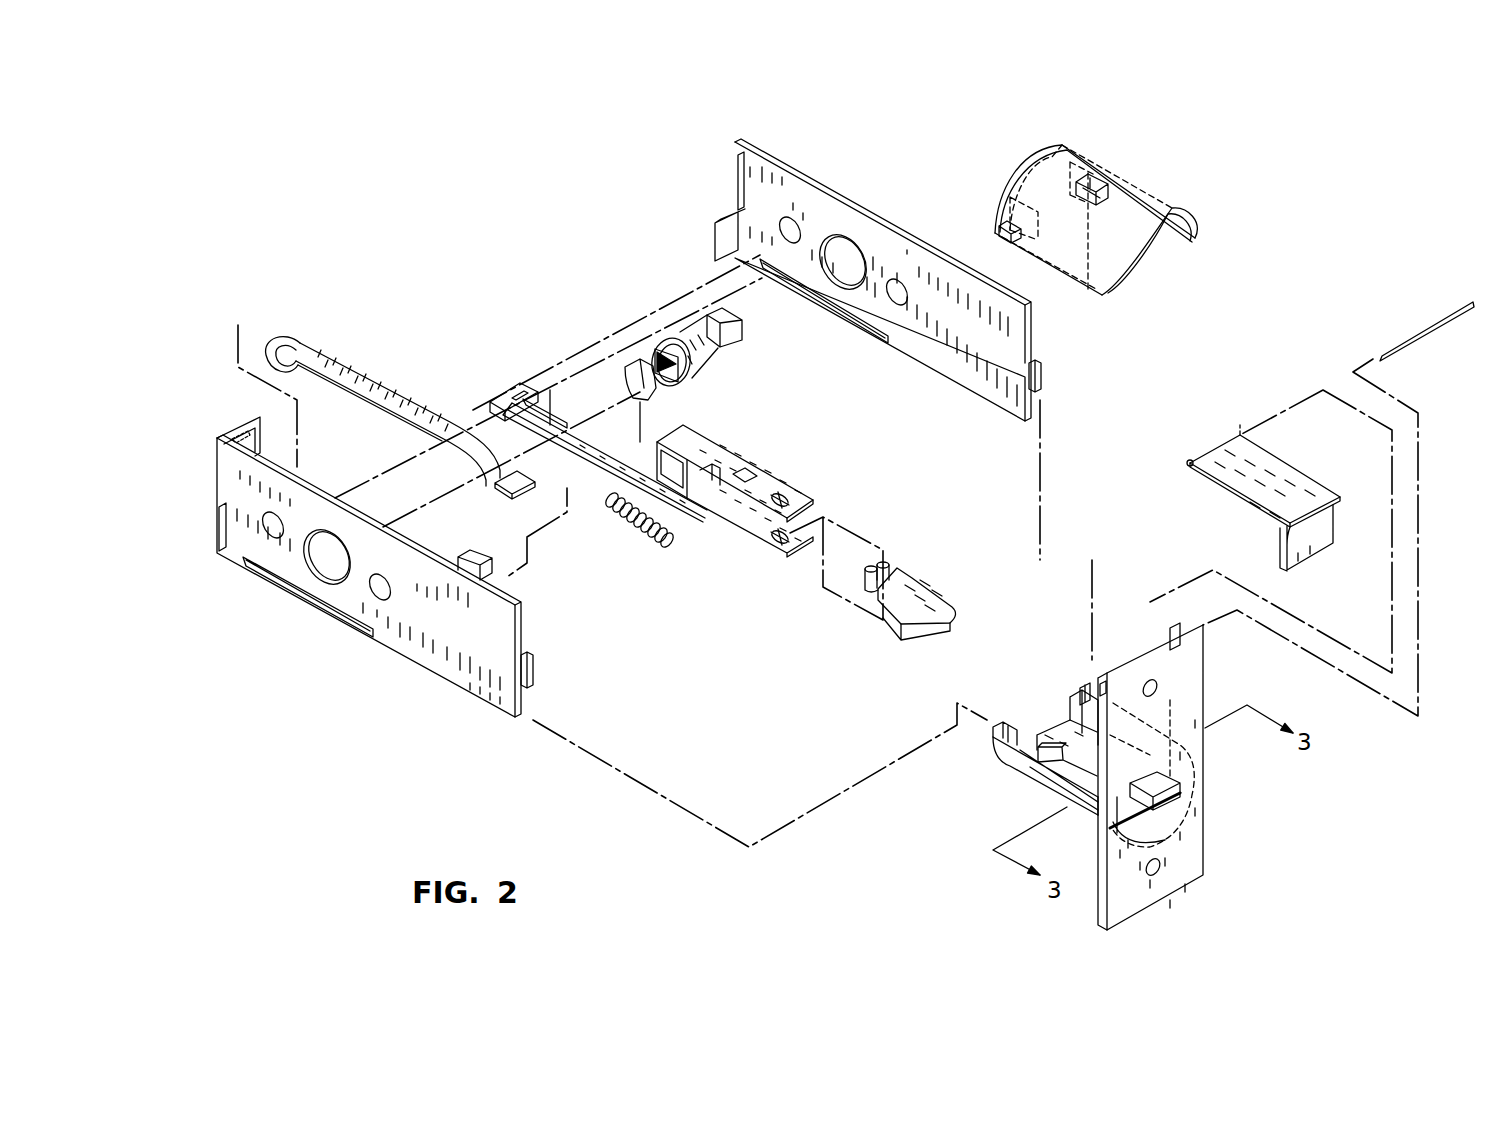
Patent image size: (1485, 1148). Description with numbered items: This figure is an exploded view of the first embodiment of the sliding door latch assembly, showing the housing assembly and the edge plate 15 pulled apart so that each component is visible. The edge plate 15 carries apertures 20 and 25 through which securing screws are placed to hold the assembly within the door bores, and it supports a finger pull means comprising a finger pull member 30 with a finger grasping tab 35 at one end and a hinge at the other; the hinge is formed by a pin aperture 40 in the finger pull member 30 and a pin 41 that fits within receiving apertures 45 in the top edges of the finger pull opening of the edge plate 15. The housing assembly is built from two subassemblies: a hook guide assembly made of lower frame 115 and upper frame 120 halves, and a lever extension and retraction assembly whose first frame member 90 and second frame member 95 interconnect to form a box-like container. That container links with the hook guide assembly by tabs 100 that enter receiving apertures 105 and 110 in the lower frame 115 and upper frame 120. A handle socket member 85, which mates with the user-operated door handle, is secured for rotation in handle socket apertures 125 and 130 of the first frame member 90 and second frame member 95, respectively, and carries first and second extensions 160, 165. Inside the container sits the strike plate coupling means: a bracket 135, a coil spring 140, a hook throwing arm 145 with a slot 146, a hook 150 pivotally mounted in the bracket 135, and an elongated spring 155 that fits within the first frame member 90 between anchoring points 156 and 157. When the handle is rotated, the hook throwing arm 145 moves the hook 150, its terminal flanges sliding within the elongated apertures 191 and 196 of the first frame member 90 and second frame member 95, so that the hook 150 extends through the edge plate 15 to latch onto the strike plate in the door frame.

The edge plate 15 is at (1127, 907).
The aperture 20 is at (1157, 684).
The aperture 25 is at (1157, 873).
The finger pull member 30 is at (1293, 477).
The finger grasping tab 35 is at (1310, 550).
The pin aperture 40 is at (1240, 432).
The pin 41 is at (1428, 330).
The receiving apertures 45 is at (1173, 642).
The handle socket member 85 is at (670, 378).
The first frame member 90 is at (457, 660).
The second frame member 95 is at (880, 244).
The tabs 100 is at (534, 667).
The receiving apertures 105 is at (1087, 690).
The receiving apertures 110 is at (1098, 150).
The lower frame 115 is at (1050, 793).
The upper frame 120 is at (1100, 262).
The handle socket aperture 125 is at (337, 580).
The handle socket aperture 130 is at (840, 252).
The bracket 135 is at (730, 458).
The coil spring 140 is at (643, 527).
The hook throwing arm 145 is at (623, 460).
The slot 146 is at (527, 402).
The hook 150 is at (940, 613).
The elongated spring 155 is at (407, 407).
The anchoring point 156 is at (237, 437).
The anchoring point 157 is at (493, 567).
The first extension 160 is at (697, 333).
The second extension 165 is at (640, 368).
The elongated aperture 191 is at (300, 588).
The elongated aperture 196 is at (857, 323).